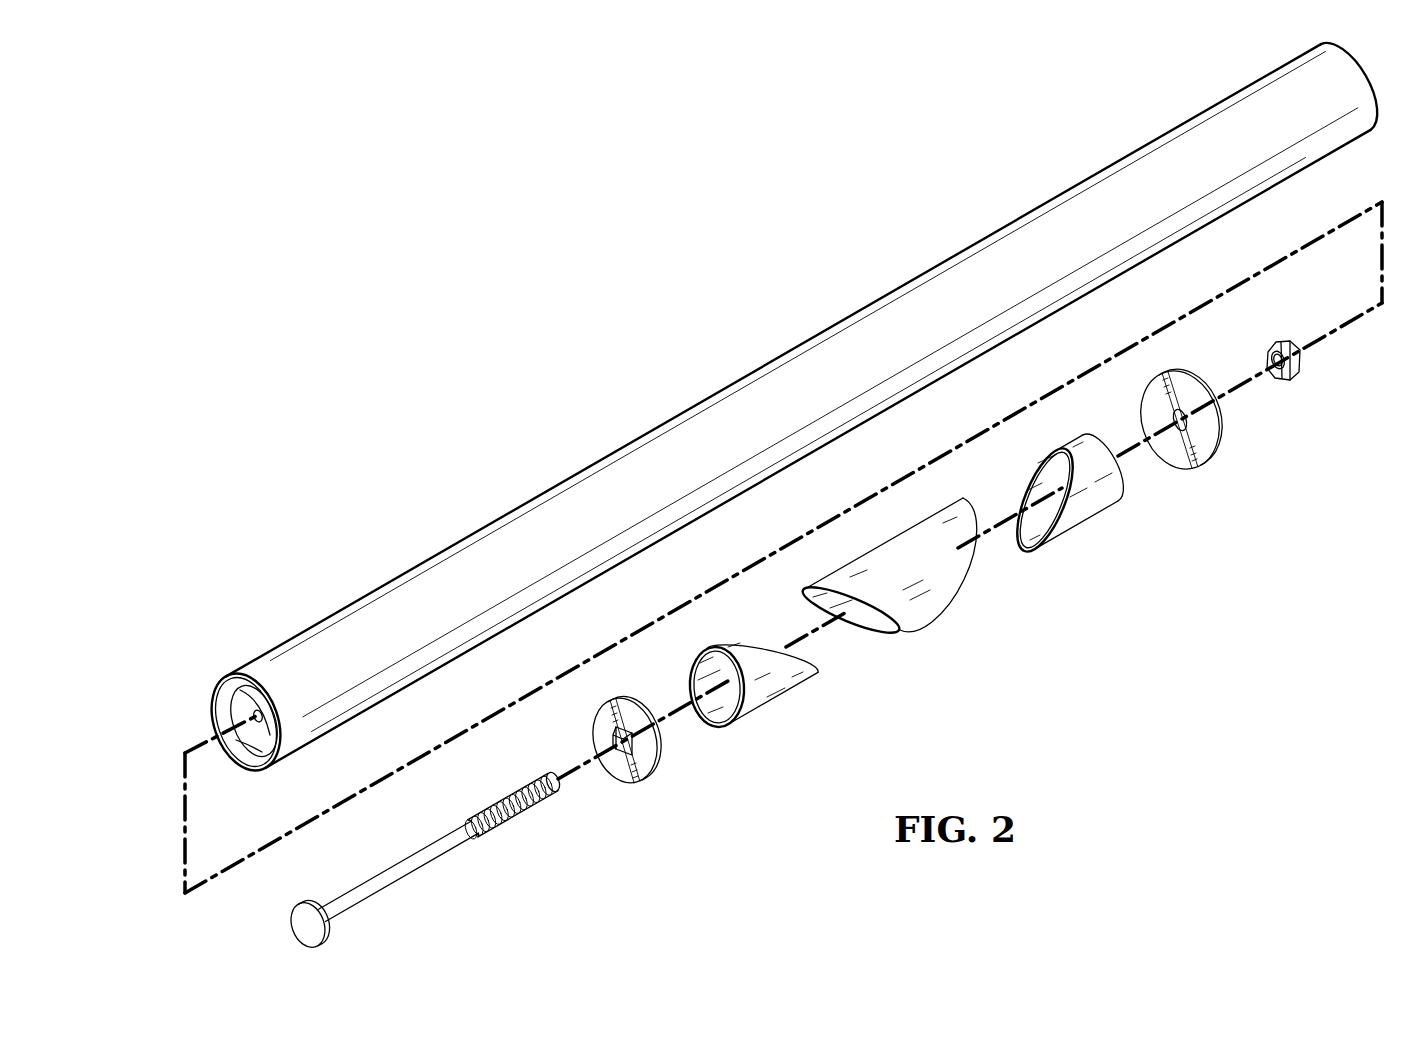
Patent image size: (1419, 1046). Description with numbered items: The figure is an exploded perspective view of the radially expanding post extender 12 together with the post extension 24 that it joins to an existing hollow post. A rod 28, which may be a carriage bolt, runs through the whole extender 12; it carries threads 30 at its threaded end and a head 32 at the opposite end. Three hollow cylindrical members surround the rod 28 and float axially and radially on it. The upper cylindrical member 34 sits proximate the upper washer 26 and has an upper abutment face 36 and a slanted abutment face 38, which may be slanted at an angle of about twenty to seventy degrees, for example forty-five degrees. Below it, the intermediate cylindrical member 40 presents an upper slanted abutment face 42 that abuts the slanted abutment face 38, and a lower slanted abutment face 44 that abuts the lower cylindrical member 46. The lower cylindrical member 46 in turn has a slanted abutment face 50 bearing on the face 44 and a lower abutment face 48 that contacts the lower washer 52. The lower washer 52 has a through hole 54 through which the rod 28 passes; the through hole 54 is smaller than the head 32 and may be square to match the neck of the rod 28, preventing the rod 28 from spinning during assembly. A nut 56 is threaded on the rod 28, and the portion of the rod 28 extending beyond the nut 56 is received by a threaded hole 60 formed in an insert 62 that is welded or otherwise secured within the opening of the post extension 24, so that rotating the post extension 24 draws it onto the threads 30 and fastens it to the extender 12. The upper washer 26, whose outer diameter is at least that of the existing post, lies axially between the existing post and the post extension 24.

The radially expanding post extender 12 is at (975, 694).
The post extension 24 is at (761, 435).
The upper washer 26 is at (1210, 465).
The rod 28 is at (405, 876).
The threads 30 is at (522, 811).
The head 32 is at (300, 926).
The upper cylindrical member 34 is at (1072, 532).
The upper abutment face 36 is at (1137, 482).
The slanted abutment face 38 is at (1005, 556).
The intermediate cylindrical member 40 is at (923, 614).
The upper slanted abutment face 42 is at (988, 497).
The lower slanted abutment face 44 is at (855, 644).
The lower cylindrical member 46 is at (772, 700).
The lower abutment face 48 is at (702, 736).
The slanted abutment face 50 is at (773, 624).
The lower washer 52 is at (612, 760).
The through hole 54 is at (613, 740).
The nut 56 is at (1298, 372).
The threaded hole 60 is at (236, 718).
The insert 62 is at (257, 767).